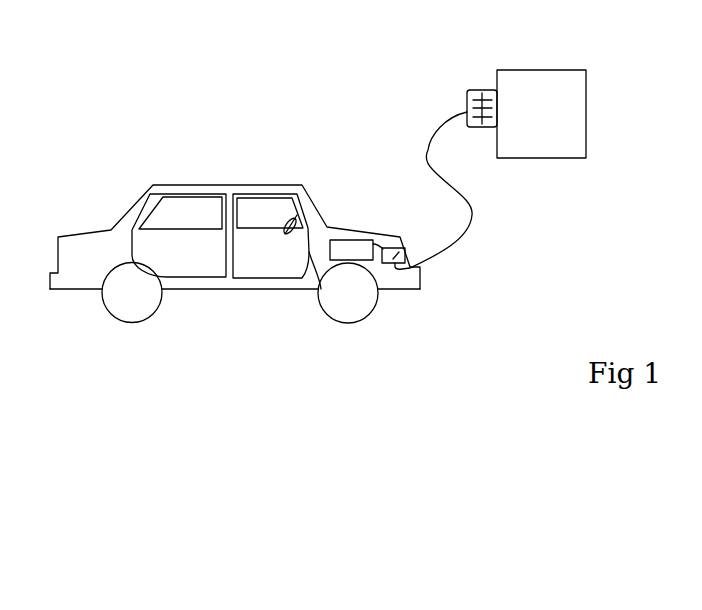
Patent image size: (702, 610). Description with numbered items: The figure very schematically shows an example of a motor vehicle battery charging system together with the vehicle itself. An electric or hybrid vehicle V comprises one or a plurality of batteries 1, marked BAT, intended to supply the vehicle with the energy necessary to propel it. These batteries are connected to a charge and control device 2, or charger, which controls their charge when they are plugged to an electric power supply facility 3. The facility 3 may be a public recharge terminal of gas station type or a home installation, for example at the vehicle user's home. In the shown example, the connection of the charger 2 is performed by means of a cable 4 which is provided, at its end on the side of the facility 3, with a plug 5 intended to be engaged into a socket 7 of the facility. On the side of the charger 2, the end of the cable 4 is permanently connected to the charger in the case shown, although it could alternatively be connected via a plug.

The vehicle V is at (87, 232).
The battery 1 is at (330, 253).
The charge and control device 2 is at (401, 250).
The electric power supply facility 3 is at (572, 127).
The cable 4 is at (445, 260).
The plug 5 is at (458, 70).
The socket 7 is at (482, 90).